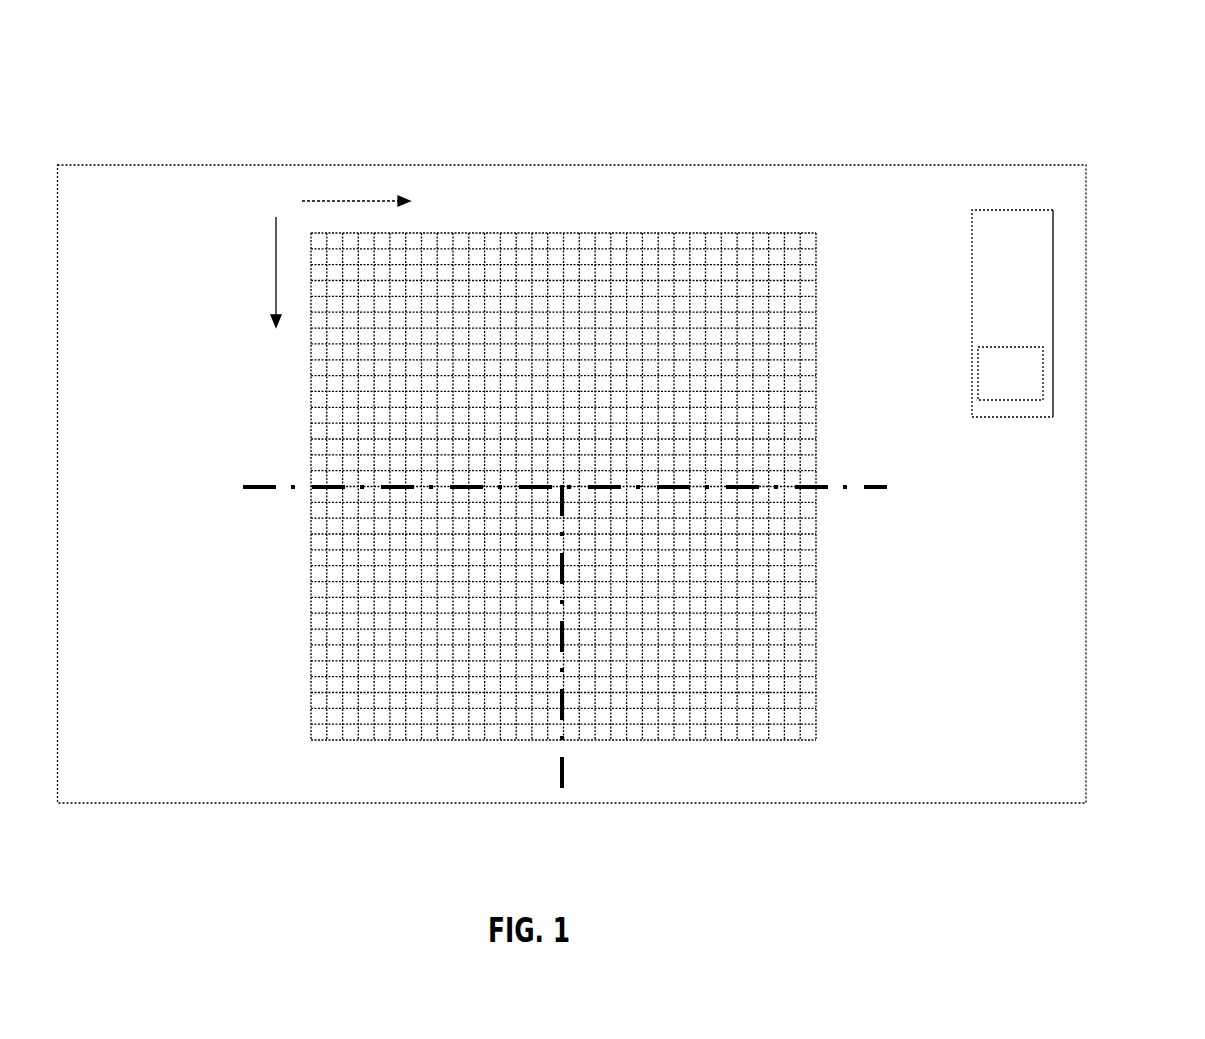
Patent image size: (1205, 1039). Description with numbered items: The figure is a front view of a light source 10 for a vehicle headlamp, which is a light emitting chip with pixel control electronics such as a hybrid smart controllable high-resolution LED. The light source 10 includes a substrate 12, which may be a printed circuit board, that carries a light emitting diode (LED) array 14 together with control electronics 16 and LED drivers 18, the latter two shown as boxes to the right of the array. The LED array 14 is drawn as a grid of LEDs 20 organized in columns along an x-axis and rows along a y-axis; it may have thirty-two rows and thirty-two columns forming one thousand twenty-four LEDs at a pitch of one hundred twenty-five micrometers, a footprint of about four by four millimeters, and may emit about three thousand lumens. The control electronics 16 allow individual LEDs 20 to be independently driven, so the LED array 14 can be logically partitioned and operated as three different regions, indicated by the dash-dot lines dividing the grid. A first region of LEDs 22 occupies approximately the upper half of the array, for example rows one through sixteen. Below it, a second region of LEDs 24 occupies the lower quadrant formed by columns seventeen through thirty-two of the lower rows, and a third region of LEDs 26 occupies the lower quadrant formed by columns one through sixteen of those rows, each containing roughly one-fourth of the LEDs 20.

The light source 10 is at (588, 46).
The substrate 12 is at (1086, 248).
The light emitting diode (LED) array 14 is at (826, 218).
The control electronics 16 is at (1035, 310).
The LED drivers 18 is at (1023, 390).
The LEDs 20 is at (817, 350).
The first region of LEDs 22 is at (270, 367).
The second region of LEDs 24 is at (721, 767).
The third region of LEDs 26 is at (283, 612).